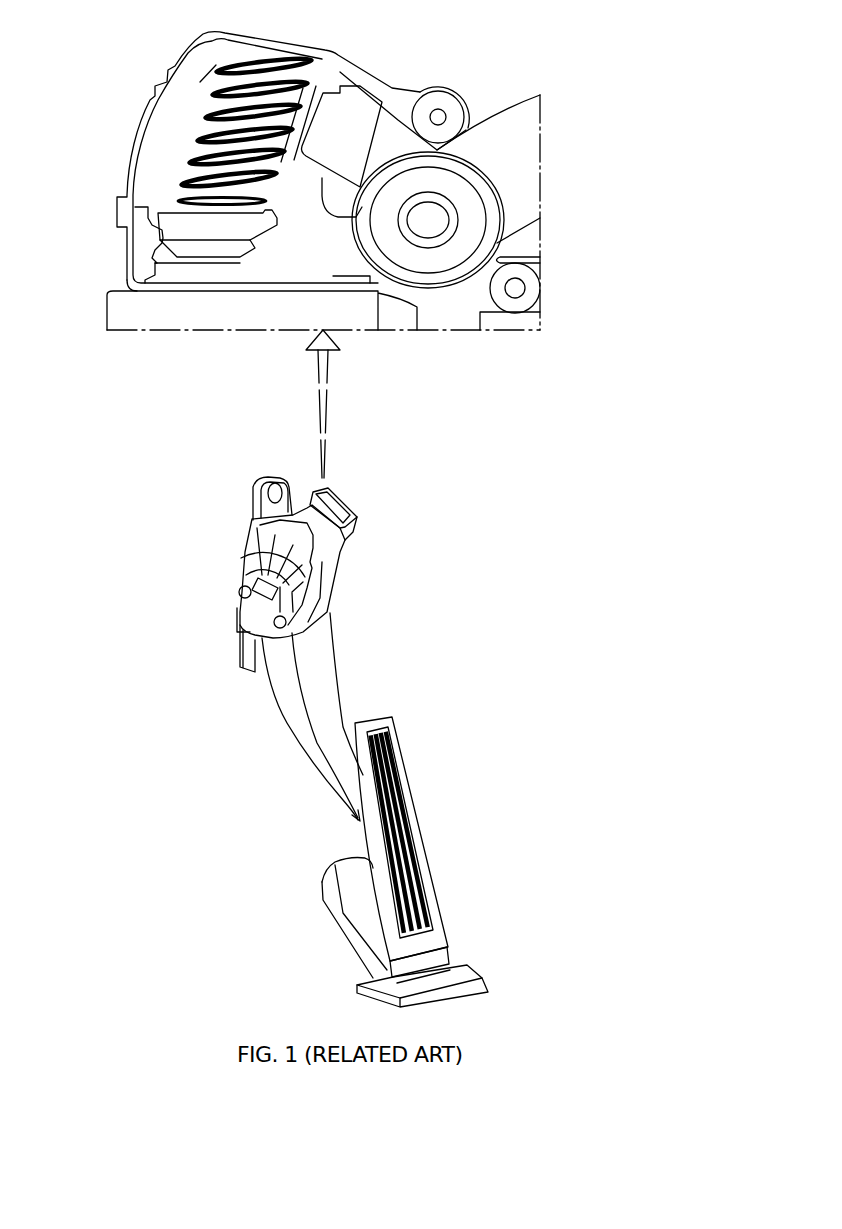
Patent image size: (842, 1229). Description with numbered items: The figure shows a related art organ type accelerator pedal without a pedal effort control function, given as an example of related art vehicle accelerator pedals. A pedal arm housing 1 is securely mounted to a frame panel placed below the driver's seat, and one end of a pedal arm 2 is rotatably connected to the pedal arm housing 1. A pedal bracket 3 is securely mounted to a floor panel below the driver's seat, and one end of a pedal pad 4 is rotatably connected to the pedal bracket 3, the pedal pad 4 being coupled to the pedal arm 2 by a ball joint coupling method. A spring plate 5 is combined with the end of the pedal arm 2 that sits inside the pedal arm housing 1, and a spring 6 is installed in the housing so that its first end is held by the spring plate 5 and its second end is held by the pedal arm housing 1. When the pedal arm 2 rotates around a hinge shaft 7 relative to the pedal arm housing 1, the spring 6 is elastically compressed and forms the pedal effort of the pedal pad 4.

The pedal arm housing 1 is at (161, 75).
The pedal arm 2 is at (523, 172).
The pedal bracket 3 is at (342, 918).
The pedal pad 4 is at (407, 847).
The spring plate 5 is at (210, 232).
The spring 6 is at (180, 168).
The hinge shaft 7 is at (428, 220).